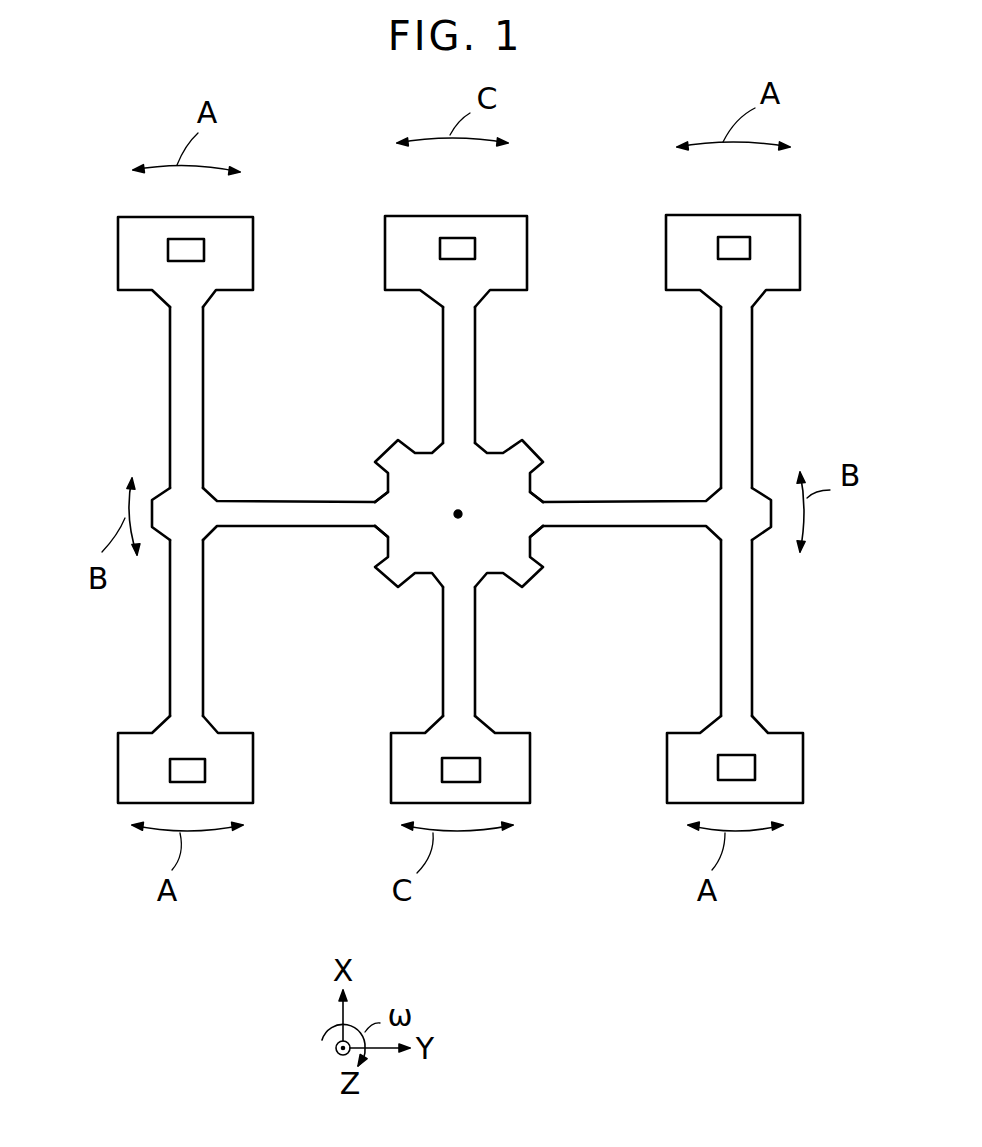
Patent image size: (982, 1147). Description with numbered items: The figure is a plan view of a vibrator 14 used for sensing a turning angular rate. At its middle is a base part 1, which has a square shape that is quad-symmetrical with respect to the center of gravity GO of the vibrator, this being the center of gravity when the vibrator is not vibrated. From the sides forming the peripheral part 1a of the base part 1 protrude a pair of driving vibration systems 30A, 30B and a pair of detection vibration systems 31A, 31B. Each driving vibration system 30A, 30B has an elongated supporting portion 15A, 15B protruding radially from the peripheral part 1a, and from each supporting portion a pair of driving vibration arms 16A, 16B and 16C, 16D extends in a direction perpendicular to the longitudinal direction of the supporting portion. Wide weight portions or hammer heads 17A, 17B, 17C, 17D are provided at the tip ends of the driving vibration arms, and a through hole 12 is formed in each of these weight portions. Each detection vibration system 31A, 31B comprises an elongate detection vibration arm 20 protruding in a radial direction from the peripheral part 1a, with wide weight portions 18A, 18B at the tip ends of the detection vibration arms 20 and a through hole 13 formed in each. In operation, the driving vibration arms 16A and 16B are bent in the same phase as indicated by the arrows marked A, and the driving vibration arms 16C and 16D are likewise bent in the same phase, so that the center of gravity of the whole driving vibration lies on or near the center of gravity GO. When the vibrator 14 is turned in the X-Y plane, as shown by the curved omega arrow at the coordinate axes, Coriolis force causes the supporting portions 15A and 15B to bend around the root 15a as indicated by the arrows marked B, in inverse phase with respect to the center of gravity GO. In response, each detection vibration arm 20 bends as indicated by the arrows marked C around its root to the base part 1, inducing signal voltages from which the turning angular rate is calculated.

The base part 1 is at (533, 410).
The peripheral part 1a is at (533, 482).
The through hole 12 is at (186, 252).
The through hole 13 is at (453, 242).
The vibrator 14 is at (814, 204).
The supporting portion 15A is at (630, 508).
The supporting portion 15B is at (298, 512).
The root 15a is at (378, 523).
The driving vibration arm 16A is at (740, 400).
The driving vibration arm 16B is at (752, 645).
The driving vibration arm 16C is at (200, 665).
The driving vibration arm 16D is at (190, 412).
The weight portion 17A is at (792, 278).
The weight portion 17B is at (792, 762).
The weight portion 17C is at (253, 765).
The weight portion 17D is at (243, 278).
The weight portion 18A is at (522, 276).
The weight portion 18B is at (518, 755).
The detection vibration arm 20 is at (463, 358).
The driving vibration system 30A is at (815, 262).
The driving vibration system 30B is at (105, 333).
The detection vibration system 31A is at (360, 214).
The detection vibration system 31B is at (545, 832).
The center of gravity GO is at (462, 511).